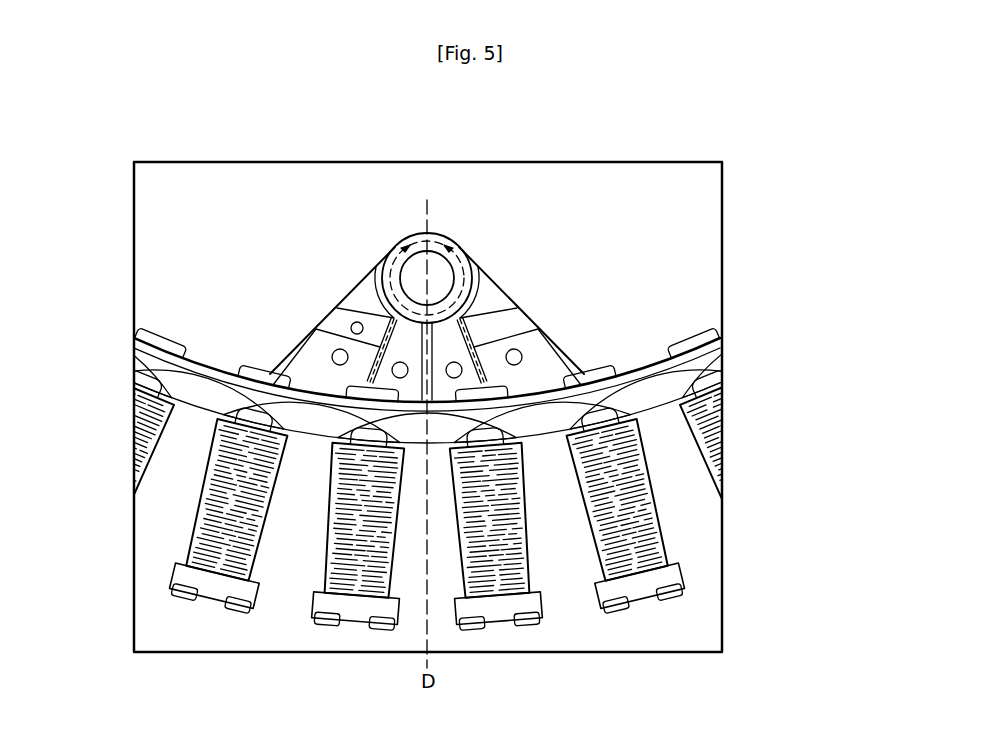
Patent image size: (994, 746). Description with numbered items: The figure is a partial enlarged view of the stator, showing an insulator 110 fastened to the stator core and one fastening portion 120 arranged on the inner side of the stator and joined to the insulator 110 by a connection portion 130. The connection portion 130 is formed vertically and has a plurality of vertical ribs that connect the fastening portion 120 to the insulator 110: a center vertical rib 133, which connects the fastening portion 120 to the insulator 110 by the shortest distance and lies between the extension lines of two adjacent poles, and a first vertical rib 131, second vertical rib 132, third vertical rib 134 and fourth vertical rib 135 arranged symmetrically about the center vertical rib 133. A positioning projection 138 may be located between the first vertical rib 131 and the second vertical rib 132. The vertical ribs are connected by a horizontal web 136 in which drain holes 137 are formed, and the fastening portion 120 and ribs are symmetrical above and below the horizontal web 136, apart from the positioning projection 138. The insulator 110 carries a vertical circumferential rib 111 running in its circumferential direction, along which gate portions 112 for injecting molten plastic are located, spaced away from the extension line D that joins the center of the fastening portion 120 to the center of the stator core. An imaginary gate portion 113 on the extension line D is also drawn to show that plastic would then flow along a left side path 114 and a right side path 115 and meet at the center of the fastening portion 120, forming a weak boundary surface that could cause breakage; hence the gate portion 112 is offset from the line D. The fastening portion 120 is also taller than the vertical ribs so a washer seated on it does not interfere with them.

The insulator 110 is at (691, 327).
The vertical circumferential rib 111 is at (217, 372).
The gate portion 112 is at (353, 411).
The imaginary gate portion 113 is at (430, 409).
The left side path 114 is at (388, 249).
The right side path 115 is at (462, 250).
The fastening portion 120 is at (446, 210).
The connection portion 130 is at (302, 317).
The first vertical rib 131 is at (351, 328).
The second vertical rib 132 is at (370, 282).
The center vertical rib 133 is at (492, 282).
The third vertical rib 134 is at (549, 343).
The fourth vertical rib 135 is at (560, 343).
The horizontal web 136 is at (487, 309).
The drain hole 137 is at (516, 366).
The positioning projection 138 is at (303, 337).